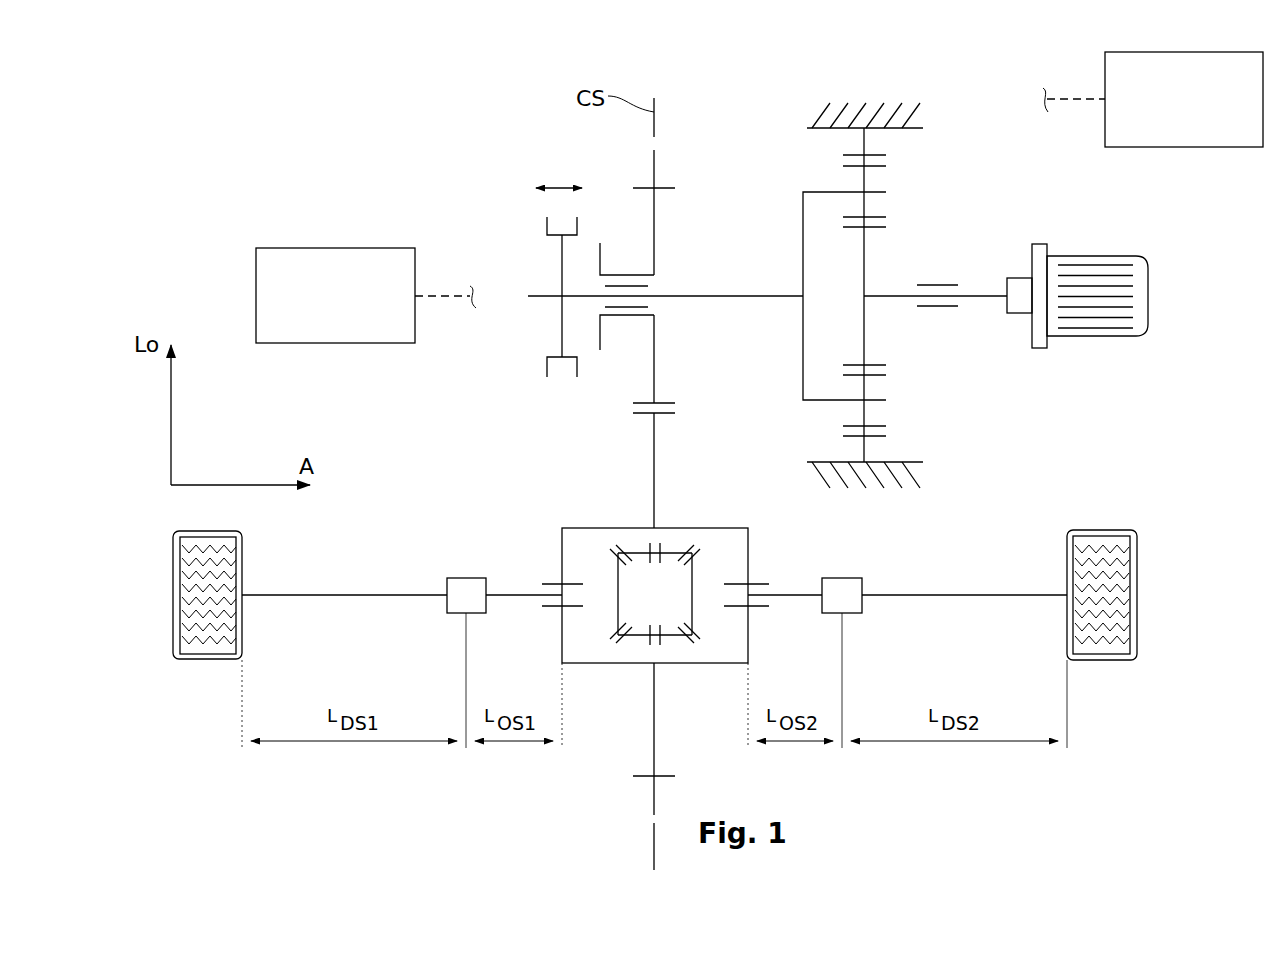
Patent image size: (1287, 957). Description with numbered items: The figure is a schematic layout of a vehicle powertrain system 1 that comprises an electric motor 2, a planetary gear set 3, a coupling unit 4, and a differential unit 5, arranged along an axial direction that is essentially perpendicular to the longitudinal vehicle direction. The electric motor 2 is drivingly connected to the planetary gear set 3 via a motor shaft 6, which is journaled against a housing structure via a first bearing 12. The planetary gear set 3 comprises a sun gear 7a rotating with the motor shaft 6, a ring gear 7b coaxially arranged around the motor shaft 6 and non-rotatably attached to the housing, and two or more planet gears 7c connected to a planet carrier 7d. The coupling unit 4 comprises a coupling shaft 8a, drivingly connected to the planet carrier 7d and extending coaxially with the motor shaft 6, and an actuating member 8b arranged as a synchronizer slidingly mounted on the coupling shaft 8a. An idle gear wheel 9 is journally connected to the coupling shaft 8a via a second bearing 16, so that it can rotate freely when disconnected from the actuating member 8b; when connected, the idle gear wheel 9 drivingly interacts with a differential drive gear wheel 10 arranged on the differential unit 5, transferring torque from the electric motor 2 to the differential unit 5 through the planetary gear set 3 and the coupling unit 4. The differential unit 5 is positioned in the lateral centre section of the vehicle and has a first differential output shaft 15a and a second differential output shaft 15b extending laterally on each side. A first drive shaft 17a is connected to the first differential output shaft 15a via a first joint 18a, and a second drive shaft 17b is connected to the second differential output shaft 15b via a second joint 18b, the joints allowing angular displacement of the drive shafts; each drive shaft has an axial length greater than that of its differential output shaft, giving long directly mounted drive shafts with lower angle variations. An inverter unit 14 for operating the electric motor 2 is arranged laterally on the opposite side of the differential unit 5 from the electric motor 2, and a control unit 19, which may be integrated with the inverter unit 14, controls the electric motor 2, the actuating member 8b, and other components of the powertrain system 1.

The vehicle powertrain system 1 is at (215, 99).
The electric motor 2 is at (1150, 297).
The planetary gear set 3 is at (782, 143).
The coupling unit 4 is at (498, 162).
The differential unit 5 is at (575, 508).
The motor shaft 6 is at (975, 297).
The sun gear 7a is at (866, 262).
The ring gear 7b is at (868, 143).
The planet gears 7c is at (868, 179).
The planet carrier 7d is at (803, 240).
The coupling shaft 8a is at (548, 296).
The actuating member 8b is at (562, 265).
The idle gear wheel 9 is at (625, 243).
The differential drive gear wheel 10 is at (654, 472).
The first bearing 12 is at (937, 285).
The inverter unit 14 is at (333, 248).
The first differential output shaft 15a is at (515, 578).
The second differential output shaft 15b is at (788, 580).
The second bearing 16 is at (622, 315).
The first drive shaft 17a is at (340, 595).
The second drive shaft 17b is at (966, 595).
The first joint 18a is at (466, 578).
The second joint 18b is at (842, 578).
The control unit 19 is at (1186, 147).